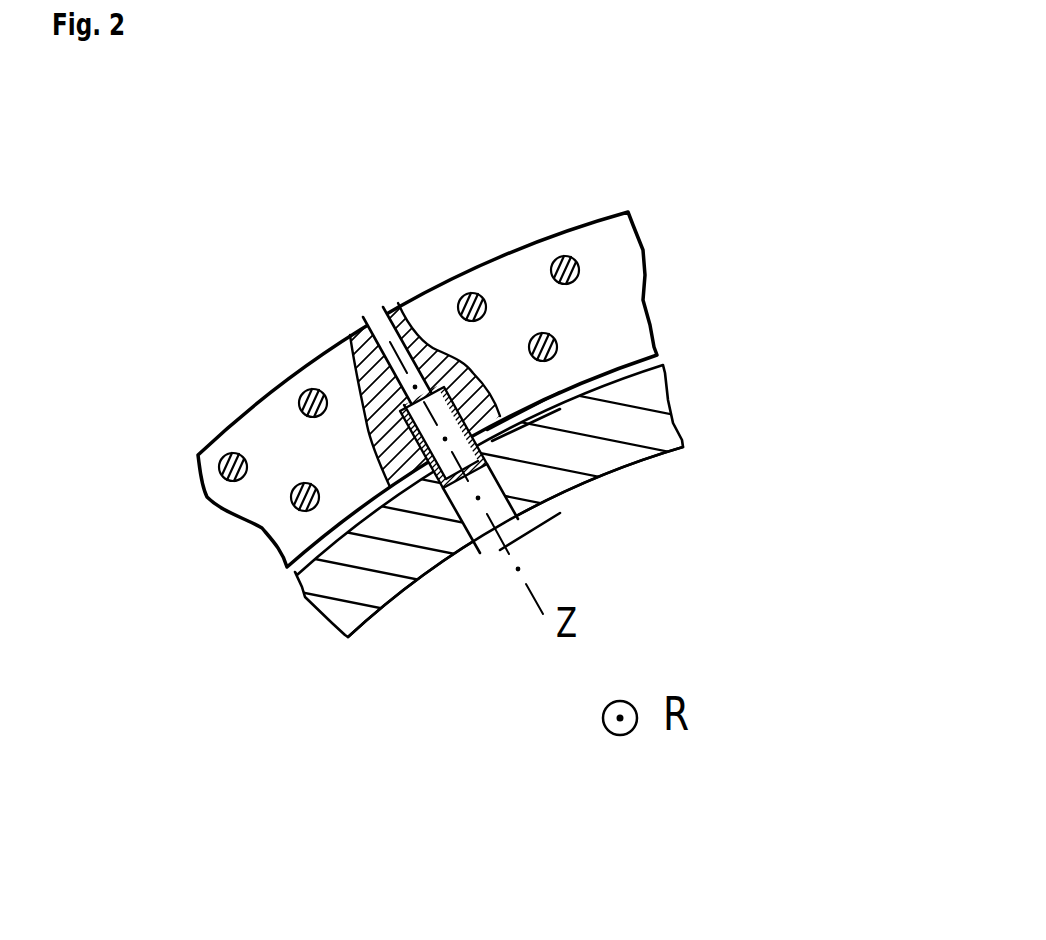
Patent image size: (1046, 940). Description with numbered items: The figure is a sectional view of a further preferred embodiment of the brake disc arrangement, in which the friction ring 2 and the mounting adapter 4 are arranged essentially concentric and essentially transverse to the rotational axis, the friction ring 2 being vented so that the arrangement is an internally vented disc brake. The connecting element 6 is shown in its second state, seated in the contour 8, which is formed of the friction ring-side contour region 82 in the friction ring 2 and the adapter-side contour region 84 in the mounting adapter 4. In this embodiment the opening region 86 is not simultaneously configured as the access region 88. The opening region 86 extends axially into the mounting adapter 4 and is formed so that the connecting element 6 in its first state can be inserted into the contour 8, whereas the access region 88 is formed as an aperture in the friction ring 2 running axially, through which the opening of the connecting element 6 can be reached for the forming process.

The friction ring 2 is at (620, 238).
The mounting adapter 4 is at (650, 393).
The connecting element 6 is at (413, 427).
The contour 8 is at (493, 440).
The friction ring-side contour region 82 is at (445, 388).
The adapter-side contour region 84 is at (447, 472).
The opening region 86 is at (520, 528).
The access region 88 is at (370, 318).